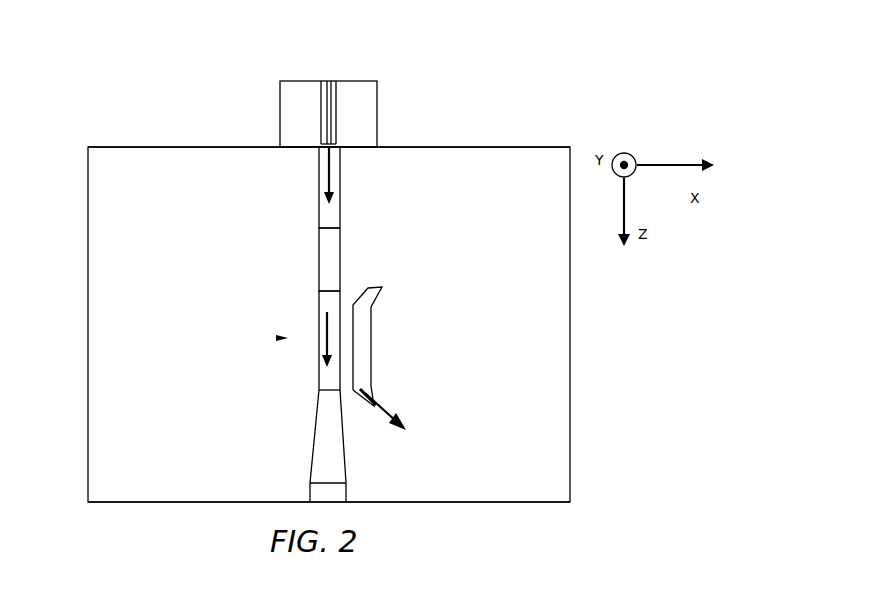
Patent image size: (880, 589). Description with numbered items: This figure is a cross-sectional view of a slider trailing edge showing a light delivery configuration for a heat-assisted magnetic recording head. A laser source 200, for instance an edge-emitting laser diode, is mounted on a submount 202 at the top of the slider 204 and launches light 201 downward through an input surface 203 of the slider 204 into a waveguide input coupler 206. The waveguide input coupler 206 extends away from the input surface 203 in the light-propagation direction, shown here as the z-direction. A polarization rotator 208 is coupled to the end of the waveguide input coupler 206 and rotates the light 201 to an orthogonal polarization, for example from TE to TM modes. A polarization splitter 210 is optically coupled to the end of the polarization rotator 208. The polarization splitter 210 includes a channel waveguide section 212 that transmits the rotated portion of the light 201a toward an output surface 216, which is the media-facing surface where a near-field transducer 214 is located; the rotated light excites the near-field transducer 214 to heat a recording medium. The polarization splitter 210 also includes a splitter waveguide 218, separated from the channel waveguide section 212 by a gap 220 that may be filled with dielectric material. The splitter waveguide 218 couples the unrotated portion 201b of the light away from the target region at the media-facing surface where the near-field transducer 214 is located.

The laser source 200 is at (328, 81).
The light 201 is at (319, 175).
The rotated portion of the light 201a is at (319, 312).
The unrotated portion of the light 201b is at (388, 401).
The submount 202 is at (280, 90).
The input surface 203 is at (125, 147).
The slider 204 is at (87, 252).
The waveguide input coupler 206 is at (319, 212).
The polarization rotator 208 is at (319, 260).
The polarization splitter 210 is at (277, 338).
The channel waveguide section 212 is at (319, 370).
The near-field transducer 214 is at (310, 492).
The output surface 216 is at (175, 503).
The splitter waveguide 218 is at (365, 337).
The gap 220 is at (349, 284).